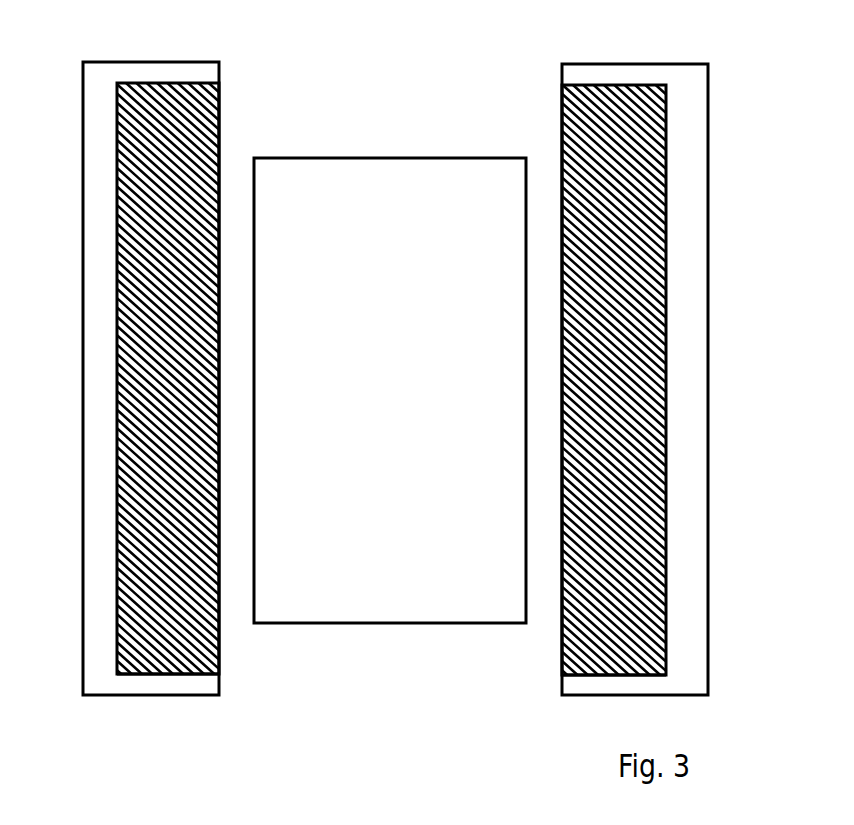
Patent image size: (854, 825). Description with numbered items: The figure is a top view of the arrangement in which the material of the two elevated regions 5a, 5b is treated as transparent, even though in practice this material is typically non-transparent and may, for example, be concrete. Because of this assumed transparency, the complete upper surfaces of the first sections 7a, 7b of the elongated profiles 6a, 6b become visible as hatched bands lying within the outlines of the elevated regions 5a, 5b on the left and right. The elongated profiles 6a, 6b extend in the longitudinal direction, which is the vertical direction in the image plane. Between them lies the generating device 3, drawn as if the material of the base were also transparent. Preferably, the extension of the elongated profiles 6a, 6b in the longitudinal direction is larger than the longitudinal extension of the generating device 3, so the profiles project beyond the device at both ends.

The generating device 3 is at (365, 158).
The elevated region 5a is at (83, 242).
The elevated region 5b is at (708, 188).
The elongated profile 6a is at (219, 121).
The elongated profile 6b is at (562, 115).
The first section 7a is at (192, 642).
The first section 7b is at (570, 642).